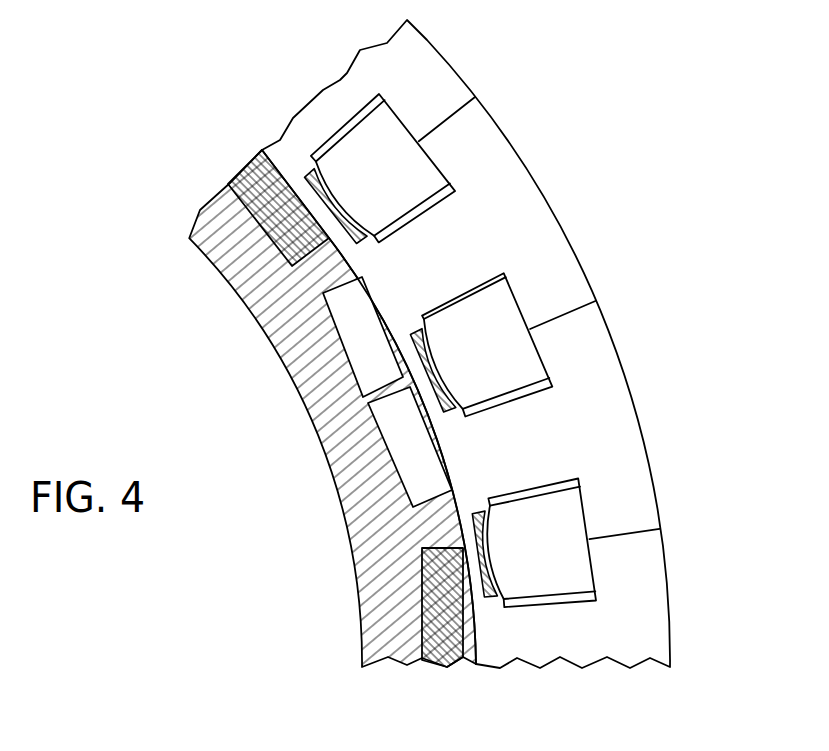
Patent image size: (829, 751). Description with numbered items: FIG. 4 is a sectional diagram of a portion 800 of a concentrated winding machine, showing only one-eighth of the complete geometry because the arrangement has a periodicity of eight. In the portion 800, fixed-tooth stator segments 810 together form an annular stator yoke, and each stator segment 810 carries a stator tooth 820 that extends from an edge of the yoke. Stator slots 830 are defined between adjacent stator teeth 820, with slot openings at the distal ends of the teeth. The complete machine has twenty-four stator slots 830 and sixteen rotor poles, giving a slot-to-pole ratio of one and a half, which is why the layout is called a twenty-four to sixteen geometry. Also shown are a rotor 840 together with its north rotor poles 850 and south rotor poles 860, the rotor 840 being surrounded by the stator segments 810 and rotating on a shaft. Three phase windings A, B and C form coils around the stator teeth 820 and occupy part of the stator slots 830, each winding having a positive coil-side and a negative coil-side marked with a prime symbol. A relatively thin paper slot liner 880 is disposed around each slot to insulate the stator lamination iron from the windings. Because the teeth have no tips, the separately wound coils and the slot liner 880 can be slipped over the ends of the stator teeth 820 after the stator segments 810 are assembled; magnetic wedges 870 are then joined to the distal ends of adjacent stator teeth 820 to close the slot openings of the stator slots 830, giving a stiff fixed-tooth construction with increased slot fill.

The portion 800 is at (178, 104).
The fixed-tooth stator segment 810 is at (408, 47).
The stator tooth 820 is at (427, 258).
The stator slot 830 is at (500, 345).
The rotor 840 is at (437, 528).
The north rotor pole 850 is at (420, 453).
The south rotor pole 860 is at (447, 657).
The magnetic wedge 870 is at (322, 198).
The paper slot liner 880 is at (340, 123).